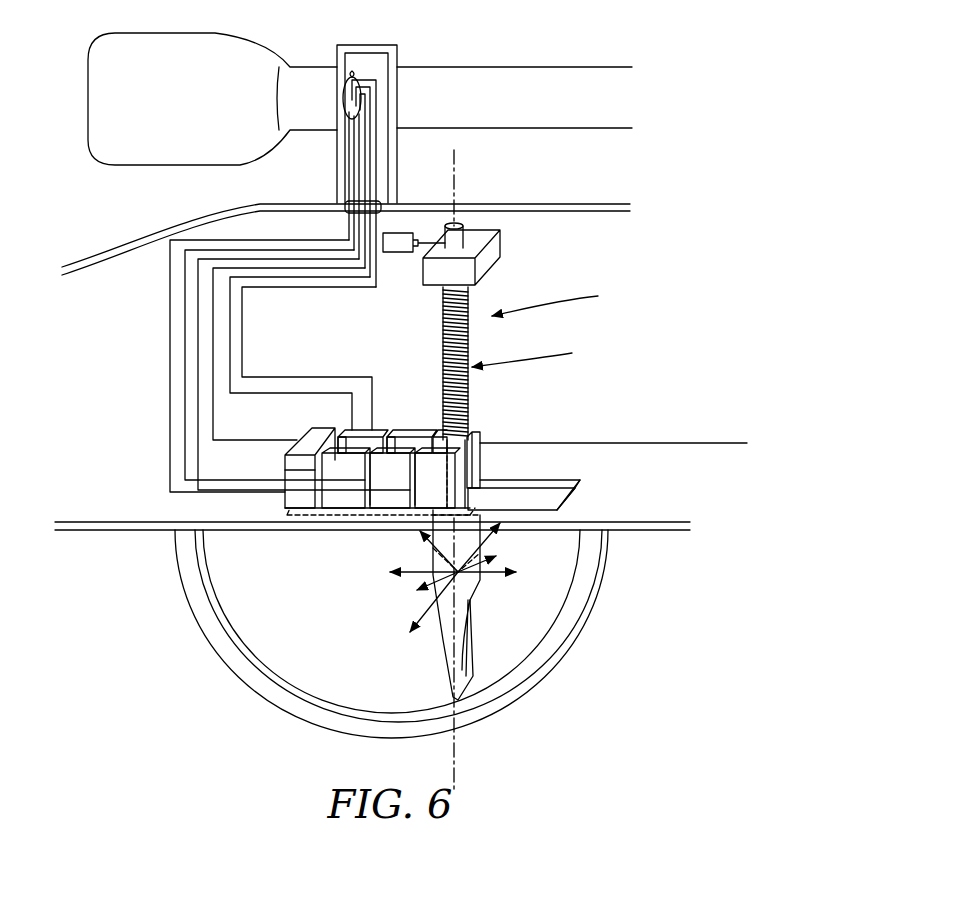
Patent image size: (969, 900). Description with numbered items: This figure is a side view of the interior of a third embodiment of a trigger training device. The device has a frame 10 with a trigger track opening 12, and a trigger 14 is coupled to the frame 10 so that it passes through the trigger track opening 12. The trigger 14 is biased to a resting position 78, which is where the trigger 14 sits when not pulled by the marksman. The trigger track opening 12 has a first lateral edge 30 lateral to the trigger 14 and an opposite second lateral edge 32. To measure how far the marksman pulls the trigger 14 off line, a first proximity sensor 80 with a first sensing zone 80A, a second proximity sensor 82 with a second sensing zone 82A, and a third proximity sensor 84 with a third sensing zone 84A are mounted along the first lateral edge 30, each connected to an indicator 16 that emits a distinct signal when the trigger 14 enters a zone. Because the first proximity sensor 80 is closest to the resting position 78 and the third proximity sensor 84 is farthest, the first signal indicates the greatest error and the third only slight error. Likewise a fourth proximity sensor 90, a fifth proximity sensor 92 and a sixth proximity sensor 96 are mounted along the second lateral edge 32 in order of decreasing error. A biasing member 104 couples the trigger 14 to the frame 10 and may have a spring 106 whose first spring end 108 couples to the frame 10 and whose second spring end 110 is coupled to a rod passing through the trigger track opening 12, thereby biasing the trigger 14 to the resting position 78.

The frame 10 is at (636, 462).
The trigger track opening 12 is at (510, 497).
The trigger 14 is at (556, 295).
The indicator 16 is at (457, 66).
The first lateral edge 30 is at (540, 479).
The second lateral edge 32 is at (580, 489).
The resting position 78 is at (480, 585).
The first proximity sensor 80 is at (478, 430).
The first sensing zone 80A is at (440, 430).
The second proximity sensor 82 is at (398, 428).
The second sensing zone 82A is at (393, 430).
The third proximity sensor 84 is at (353, 428).
The third sensing zone 84A is at (342, 430).
The fourth proximity sensor 90 is at (425, 498).
The fifth proximity sensor 92 is at (380, 498).
The sixth proximity sensor 96 is at (335, 498).
The biasing member 104 is at (541, 352).
The spring 106 is at (469, 338).
The first spring end 108 is at (478, 290).
The second spring end 110 is at (469, 393).